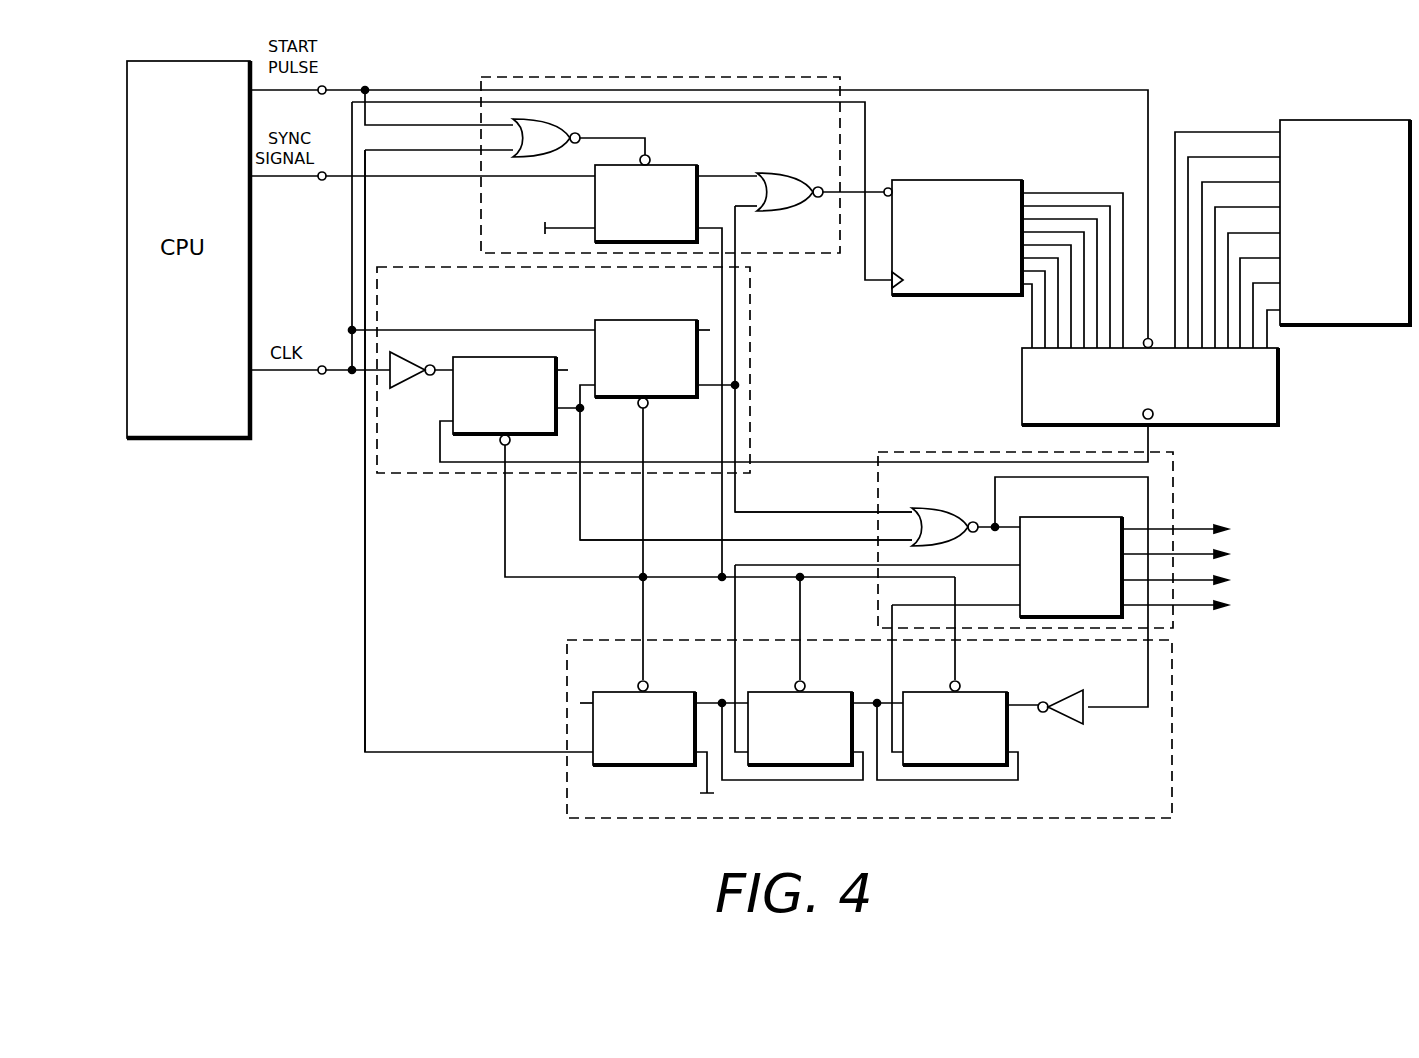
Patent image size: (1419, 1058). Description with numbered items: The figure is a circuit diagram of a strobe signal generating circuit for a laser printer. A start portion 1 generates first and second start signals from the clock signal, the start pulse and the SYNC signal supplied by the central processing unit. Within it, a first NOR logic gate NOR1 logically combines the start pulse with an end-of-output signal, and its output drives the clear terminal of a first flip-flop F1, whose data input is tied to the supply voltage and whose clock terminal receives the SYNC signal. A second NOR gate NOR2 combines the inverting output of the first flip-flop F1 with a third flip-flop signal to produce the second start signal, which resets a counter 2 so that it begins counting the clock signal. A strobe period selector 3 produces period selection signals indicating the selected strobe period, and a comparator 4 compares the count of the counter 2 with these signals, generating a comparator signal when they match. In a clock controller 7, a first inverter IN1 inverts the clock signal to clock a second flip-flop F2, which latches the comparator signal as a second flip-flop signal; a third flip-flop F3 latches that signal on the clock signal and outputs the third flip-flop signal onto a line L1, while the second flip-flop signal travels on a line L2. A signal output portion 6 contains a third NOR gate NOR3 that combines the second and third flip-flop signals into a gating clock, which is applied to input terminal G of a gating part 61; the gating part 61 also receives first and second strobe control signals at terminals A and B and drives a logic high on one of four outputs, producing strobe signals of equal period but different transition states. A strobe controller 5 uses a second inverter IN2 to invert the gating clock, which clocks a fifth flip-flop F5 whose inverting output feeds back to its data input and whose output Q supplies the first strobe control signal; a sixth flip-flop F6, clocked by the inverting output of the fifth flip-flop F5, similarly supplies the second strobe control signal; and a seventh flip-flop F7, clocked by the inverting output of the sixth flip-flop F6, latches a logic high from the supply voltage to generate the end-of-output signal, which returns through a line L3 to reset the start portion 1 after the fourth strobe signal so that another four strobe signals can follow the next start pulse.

The start portion 1 is at (664, 327).
The counter 2 is at (955, 180).
The strobe period selector 3 is at (1341, 120).
The comparator 4 is at (1278, 388).
The strobe controller 5 is at (890, 729).
The signal output portion 6 is at (1012, 554).
The clock controller 7 is at (644, 403).
The gating part 61 is at (1078, 517).
The first flip-flop F1 is at (680, 165).
The second flip-flop F2 is at (512, 357).
The third flip-flop F3 is at (644, 320).
The fifth flip-flop F5 is at (992, 692).
The sixth flip-flop F6 is at (837, 692).
The seventh flip-flop F7 is at (682, 692).
The first NOR logic gate NOR1 is at (538, 122).
The second NOR gate NOR2 is at (765, 174).
The third NOR gate NOR3 is at (942, 500).
The first inverter IN1 is at (405, 383).
The second inverter IN2 is at (1068, 716).
The line L1 is at (814, 512).
The signal line L2 is at (682, 540).
The line L3 is at (366, 556).